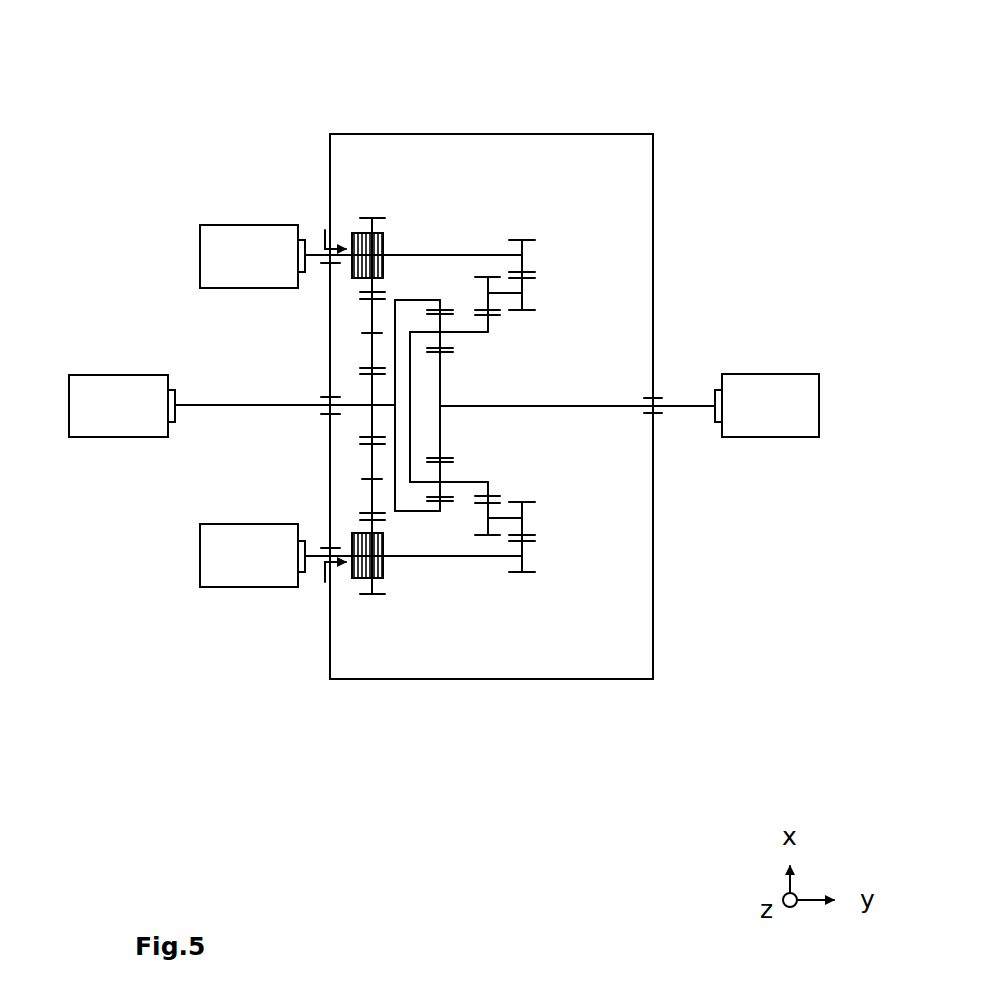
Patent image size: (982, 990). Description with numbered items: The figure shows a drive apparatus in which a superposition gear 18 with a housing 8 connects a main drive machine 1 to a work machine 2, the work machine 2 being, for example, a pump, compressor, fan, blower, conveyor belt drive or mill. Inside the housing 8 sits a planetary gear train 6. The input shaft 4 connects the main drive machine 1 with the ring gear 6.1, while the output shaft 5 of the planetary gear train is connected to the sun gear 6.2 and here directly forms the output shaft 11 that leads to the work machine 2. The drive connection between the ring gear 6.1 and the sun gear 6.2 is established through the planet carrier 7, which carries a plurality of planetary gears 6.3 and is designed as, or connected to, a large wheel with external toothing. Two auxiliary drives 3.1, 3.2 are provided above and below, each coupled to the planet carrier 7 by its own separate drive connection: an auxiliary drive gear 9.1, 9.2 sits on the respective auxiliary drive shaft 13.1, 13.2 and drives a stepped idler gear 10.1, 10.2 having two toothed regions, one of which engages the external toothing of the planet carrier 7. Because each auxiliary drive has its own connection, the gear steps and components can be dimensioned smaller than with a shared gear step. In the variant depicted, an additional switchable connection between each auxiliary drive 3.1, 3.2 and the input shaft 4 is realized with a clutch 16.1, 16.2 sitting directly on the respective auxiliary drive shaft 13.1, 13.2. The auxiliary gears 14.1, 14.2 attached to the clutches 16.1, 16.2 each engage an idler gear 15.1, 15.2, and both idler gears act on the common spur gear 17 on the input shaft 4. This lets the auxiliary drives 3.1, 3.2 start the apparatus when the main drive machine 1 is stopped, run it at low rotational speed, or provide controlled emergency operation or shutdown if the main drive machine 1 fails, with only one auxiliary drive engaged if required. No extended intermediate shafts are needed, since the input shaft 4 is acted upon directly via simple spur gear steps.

The main drive machine 1 is at (120, 375).
The work machine 2 is at (790, 374).
The first auxiliary drive 3.1 is at (240, 225).
The second auxiliary drive 3.2 is at (225, 587).
The input shaft 4 is at (190, 405).
The output shaft of the planetary gear train 5 is at (490, 408).
The planetary gear train 6 is at (460, 386).
The ring gear 6.1 is at (390, 395).
The sun gear 6.2 is at (438, 427).
The planetary gears 6.3 is at (465, 336).
The planet carrier 7 is at (488, 482).
The housing 8 is at (585, 134).
The first auxiliary drive gear 9.1 is at (527, 247).
The second auxiliary drive gear 9.2 is at (527, 565).
The first stepped idler gear 10.1 is at (501, 293).
The second stepped idler gear 10.2 is at (500, 515).
The output shaft 11 is at (697, 406).
The first auxiliary drive shaft 13.1 is at (428, 255).
The second auxiliary drive shaft 13.2 is at (437, 556).
The first auxiliary gear 14.1 is at (376, 218).
The second auxiliary gear 14.2 is at (372, 594).
The first idler gear 15.1 is at (372, 333).
The second idler gear 15.2 is at (372, 488).
The first clutch 16.1 is at (360, 232).
The second clutch 16.2 is at (362, 578).
The common spur gear 17 is at (372, 430).
The superposition gear 18 is at (670, 586).